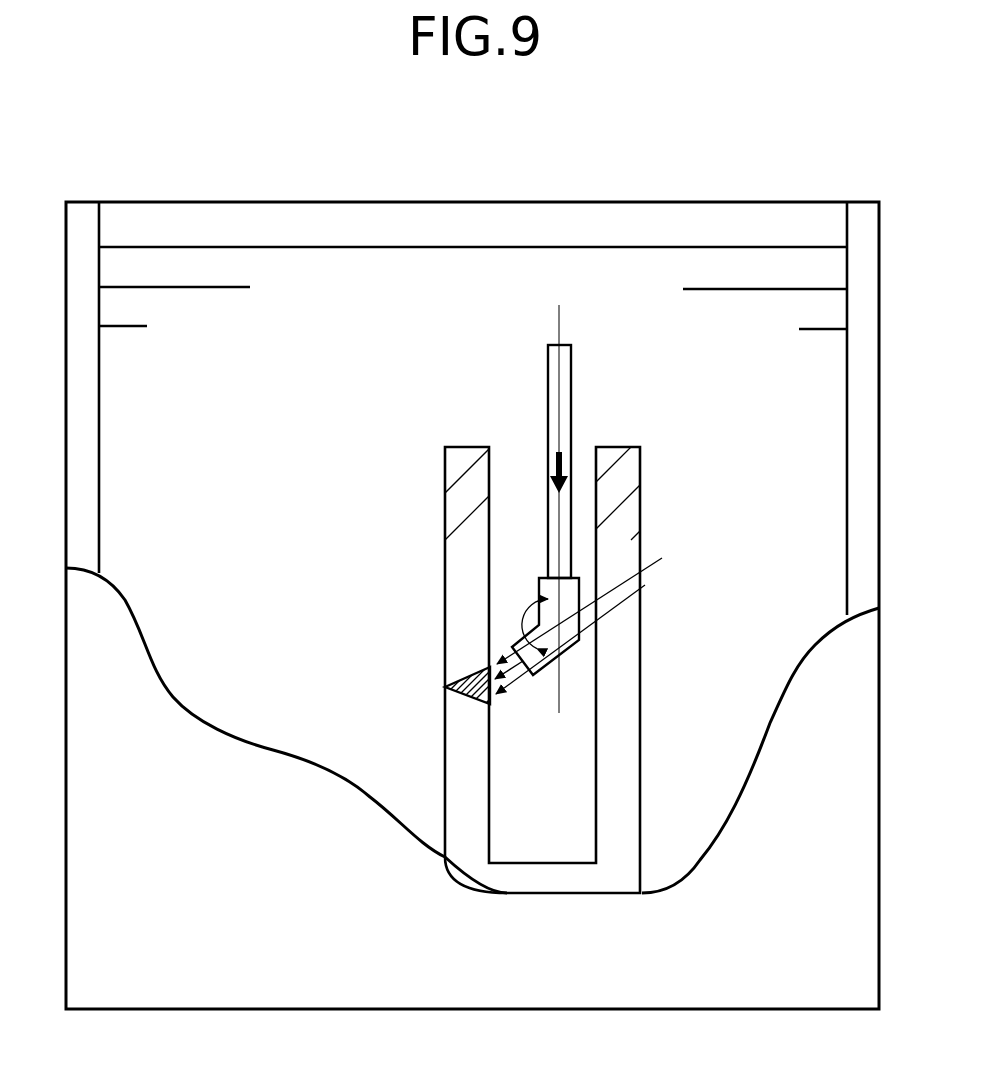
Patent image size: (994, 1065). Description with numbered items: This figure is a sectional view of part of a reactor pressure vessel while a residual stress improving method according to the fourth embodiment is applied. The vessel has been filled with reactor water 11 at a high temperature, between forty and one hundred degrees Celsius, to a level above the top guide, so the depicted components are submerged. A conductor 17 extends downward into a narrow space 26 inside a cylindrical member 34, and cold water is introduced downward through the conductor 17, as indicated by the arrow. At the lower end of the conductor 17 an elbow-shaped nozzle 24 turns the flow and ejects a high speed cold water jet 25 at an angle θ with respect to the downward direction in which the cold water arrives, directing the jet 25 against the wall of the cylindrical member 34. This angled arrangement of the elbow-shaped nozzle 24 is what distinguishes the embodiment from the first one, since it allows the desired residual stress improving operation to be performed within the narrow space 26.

The reactor water 11 is at (648, 282).
The conductor 17 is at (567, 385).
The elbow-shaped nozzle 24 is at (570, 597).
The high speed cold water jet 25 is at (518, 683).
The narrow space 26 is at (514, 475).
The cylindrical member 34 is at (463, 542).